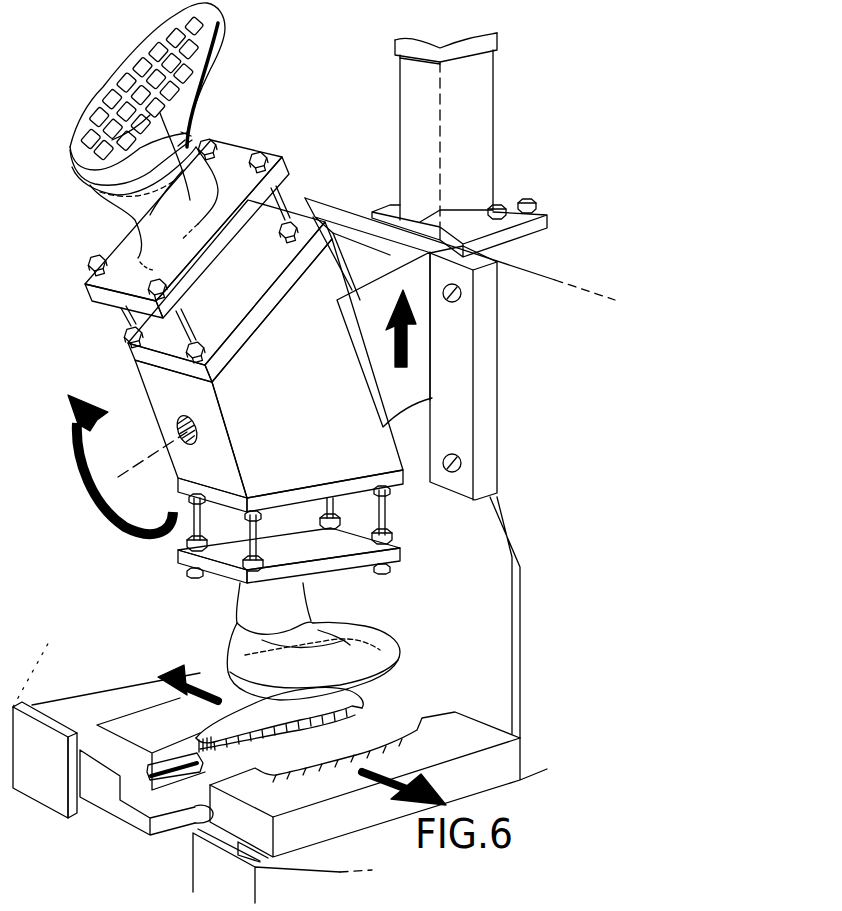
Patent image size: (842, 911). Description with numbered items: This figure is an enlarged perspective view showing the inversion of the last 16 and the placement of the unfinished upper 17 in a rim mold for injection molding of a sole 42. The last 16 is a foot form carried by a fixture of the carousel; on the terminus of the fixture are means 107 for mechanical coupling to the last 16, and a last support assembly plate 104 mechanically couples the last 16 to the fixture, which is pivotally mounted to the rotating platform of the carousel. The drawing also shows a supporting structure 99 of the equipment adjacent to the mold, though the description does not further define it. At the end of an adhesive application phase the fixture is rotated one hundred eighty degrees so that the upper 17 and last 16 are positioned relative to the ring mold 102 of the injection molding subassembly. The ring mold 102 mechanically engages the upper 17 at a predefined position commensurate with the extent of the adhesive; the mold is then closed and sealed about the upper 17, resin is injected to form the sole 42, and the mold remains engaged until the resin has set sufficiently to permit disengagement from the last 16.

The injection molded sole 42 is at (127, 78).
The unfinished upper 17 is at (193, 110).
The last 16 is at (153, 208).
The means for mechanical coupling 107 is at (254, 294).
The plate 104 is at (107, 302).
The support column 99 is at (556, 425).
The ring mold 102 is at (470, 725).